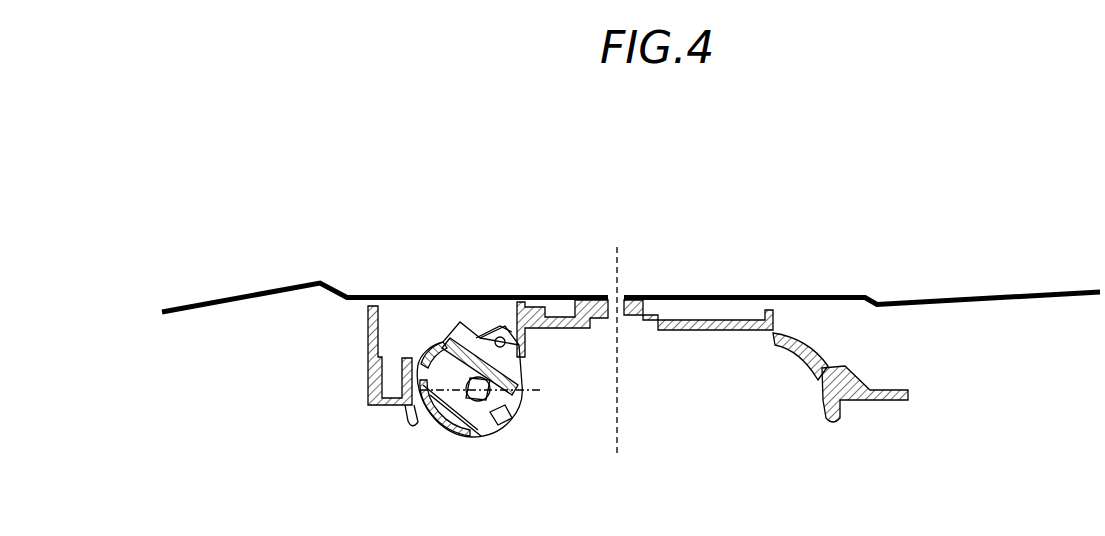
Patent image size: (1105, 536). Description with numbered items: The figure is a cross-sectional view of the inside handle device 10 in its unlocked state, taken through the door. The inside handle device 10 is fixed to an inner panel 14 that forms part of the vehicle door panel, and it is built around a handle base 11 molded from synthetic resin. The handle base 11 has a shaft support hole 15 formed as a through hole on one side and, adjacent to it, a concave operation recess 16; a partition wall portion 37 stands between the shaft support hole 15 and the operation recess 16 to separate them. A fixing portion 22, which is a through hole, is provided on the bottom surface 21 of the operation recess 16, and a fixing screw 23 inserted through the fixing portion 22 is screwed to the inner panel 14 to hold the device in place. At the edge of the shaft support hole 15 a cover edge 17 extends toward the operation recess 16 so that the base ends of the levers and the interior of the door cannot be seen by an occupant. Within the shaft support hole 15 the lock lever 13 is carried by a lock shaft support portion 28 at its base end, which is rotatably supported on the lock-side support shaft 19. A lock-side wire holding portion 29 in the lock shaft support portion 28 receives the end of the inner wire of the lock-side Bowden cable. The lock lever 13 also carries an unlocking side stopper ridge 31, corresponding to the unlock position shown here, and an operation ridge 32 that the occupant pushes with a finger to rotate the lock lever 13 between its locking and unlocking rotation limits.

The inside handle device 10 is at (885, 375).
The handle base 11 is at (366, 392).
The lock lever 13 is at (527, 385).
The inner panel 14 is at (259, 293).
The shaft support hole 15 is at (418, 338).
The operation recess 16 is at (759, 389).
The cover edge 17 is at (408, 421).
The lock-side support shaft 19 is at (483, 402).
The bottom surface 21 is at (676, 332).
The fixing portion 22 is at (628, 293).
The fixing screw 23 is at (619, 244).
The lock shaft support portion 28 is at (453, 337).
The lock-side wire holding portion 29 is at (503, 336).
The unlocking side stopper ridge 31 is at (497, 330).
The operation ridge 32 is at (500, 417).
The partition wall portion 37 is at (527, 345).